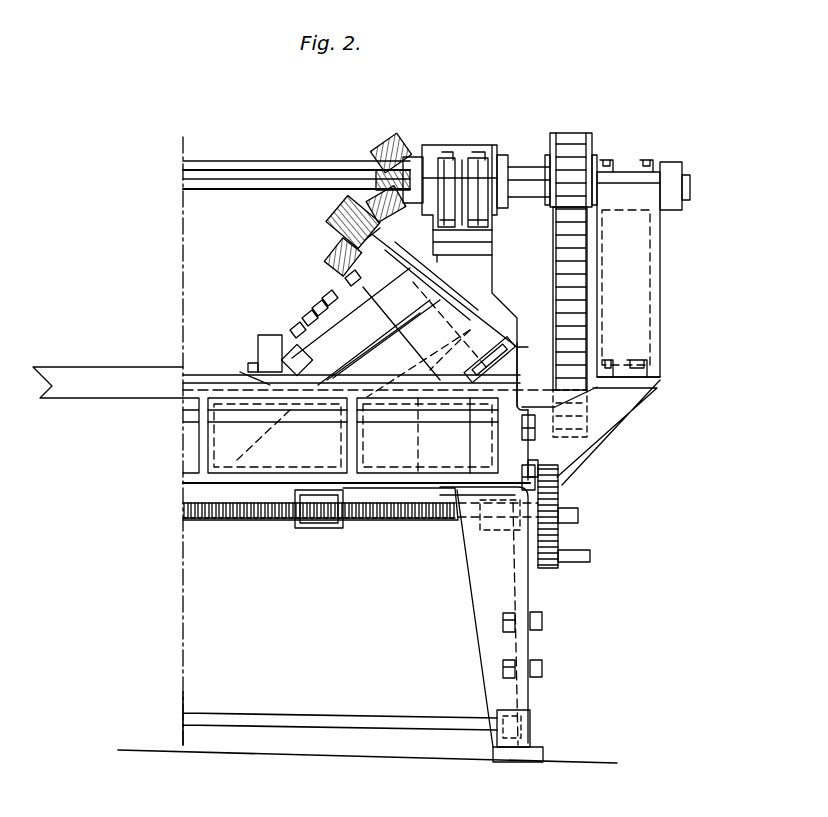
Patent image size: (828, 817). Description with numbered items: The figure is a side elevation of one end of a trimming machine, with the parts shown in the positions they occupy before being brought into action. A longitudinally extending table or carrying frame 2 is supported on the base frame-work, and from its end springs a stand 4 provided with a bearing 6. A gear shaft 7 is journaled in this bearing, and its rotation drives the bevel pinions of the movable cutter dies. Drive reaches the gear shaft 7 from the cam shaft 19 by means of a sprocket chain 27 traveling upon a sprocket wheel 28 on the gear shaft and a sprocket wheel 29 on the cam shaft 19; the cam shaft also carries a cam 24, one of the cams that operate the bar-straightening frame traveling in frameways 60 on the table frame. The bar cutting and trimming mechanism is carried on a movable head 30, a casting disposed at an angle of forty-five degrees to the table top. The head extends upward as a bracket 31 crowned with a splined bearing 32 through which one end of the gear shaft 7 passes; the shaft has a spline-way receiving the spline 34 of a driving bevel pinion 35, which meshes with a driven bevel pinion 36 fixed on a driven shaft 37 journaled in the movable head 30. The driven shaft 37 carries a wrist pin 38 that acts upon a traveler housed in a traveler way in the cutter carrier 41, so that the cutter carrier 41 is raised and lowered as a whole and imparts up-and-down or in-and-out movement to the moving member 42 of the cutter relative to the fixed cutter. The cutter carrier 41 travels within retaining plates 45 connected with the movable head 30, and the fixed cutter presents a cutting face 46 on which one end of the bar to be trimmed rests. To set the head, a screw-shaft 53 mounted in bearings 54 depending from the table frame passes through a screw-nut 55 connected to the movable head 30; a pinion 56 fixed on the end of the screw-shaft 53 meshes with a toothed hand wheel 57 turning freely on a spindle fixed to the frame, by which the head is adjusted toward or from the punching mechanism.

The table or carrying frame 2 is at (367, 450).
The stand 4 is at (626, 287).
The bearing 6 is at (622, 170).
The gear shaft 7 is at (241, 182).
The cam shaft 19 is at (108, 382).
The cam 24 is at (273, 344).
The sprocket chain 27 is at (554, 288).
The sprocket wheel 28 is at (570, 150).
The sprocket wheel 29 is at (522, 407).
The movable head 30 is at (356, 324).
The bracket 31 is at (482, 332).
The splined bearing 32 is at (462, 190).
The spline 34 is at (398, 178).
The driving bevel pinion 35 is at (391, 141).
The driven bevel pinion 36 is at (342, 262).
The driven shaft 37 is at (334, 258).
The wrist pin 38 is at (436, 290).
The cutter carrier 41 is at (313, 352).
The moving member of the cutter 42 is at (277, 370).
The retaining plates 45 is at (350, 282).
The cutting face 46 is at (250, 382).
The screw-shaft 53 is at (442, 520).
The bearings 54 is at (528, 530).
The screw-nut 55 is at (312, 530).
The pinion 56 is at (560, 503).
The toothed hand wheel 57 is at (565, 566).
The frameways 60 is at (418, 363).